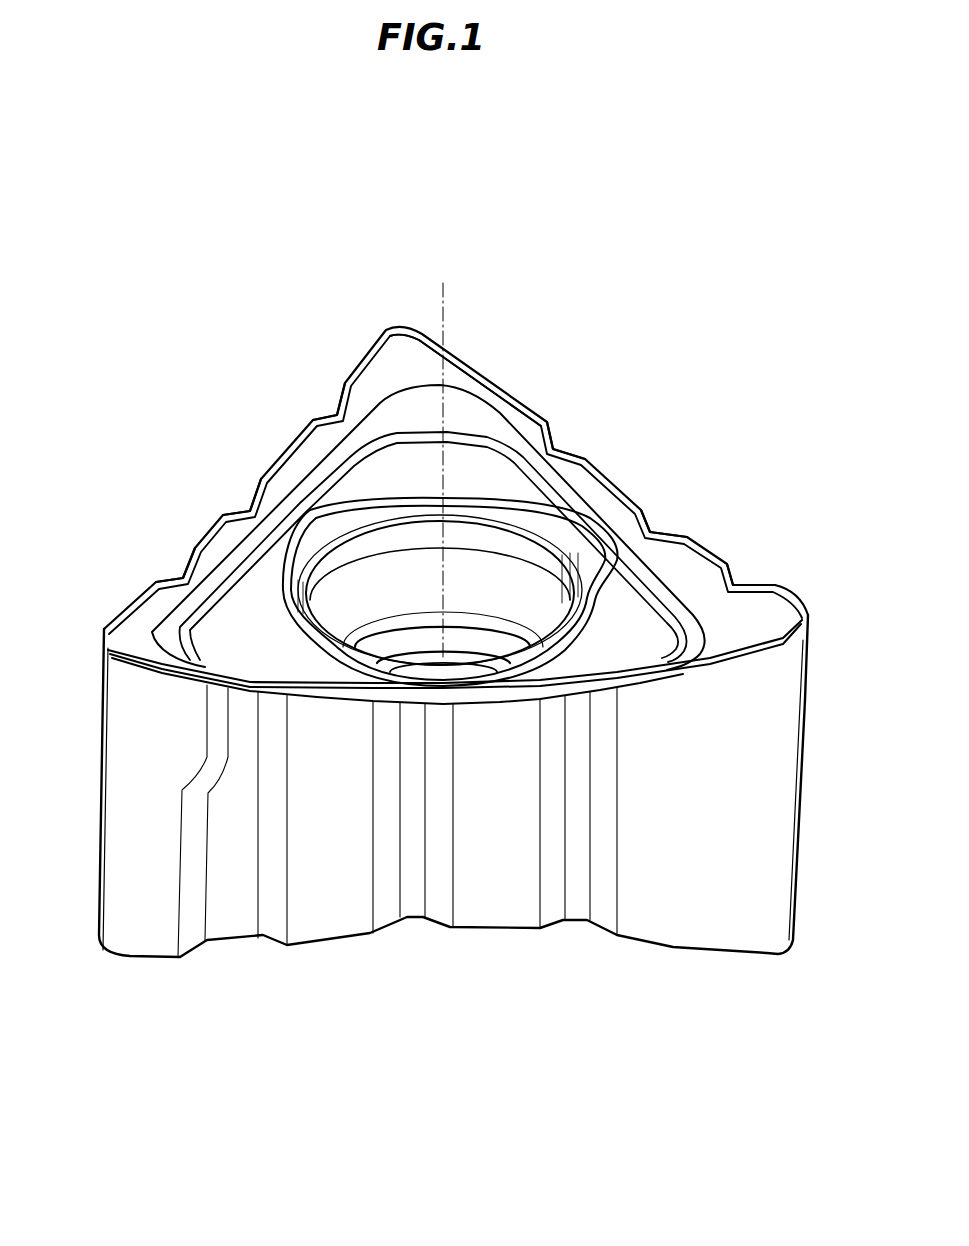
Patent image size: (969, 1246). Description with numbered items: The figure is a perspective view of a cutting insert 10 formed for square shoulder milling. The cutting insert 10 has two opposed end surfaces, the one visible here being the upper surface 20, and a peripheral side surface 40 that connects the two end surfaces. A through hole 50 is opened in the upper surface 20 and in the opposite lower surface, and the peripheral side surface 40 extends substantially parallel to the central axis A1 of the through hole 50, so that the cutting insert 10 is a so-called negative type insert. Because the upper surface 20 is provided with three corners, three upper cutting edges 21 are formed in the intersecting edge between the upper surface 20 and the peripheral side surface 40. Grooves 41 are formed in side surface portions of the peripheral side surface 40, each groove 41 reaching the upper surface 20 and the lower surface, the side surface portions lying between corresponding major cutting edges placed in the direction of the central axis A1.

The cutting insert 10 is at (306, 255).
The upper surface 20 is at (270, 657).
The upper cutting edges 21 is at (507, 375).
The peripheral side surface 40 is at (723, 840).
The grooves 41 is at (335, 416).
The through hole 50 is at (560, 613).
The central axis A1 is at (444, 455).